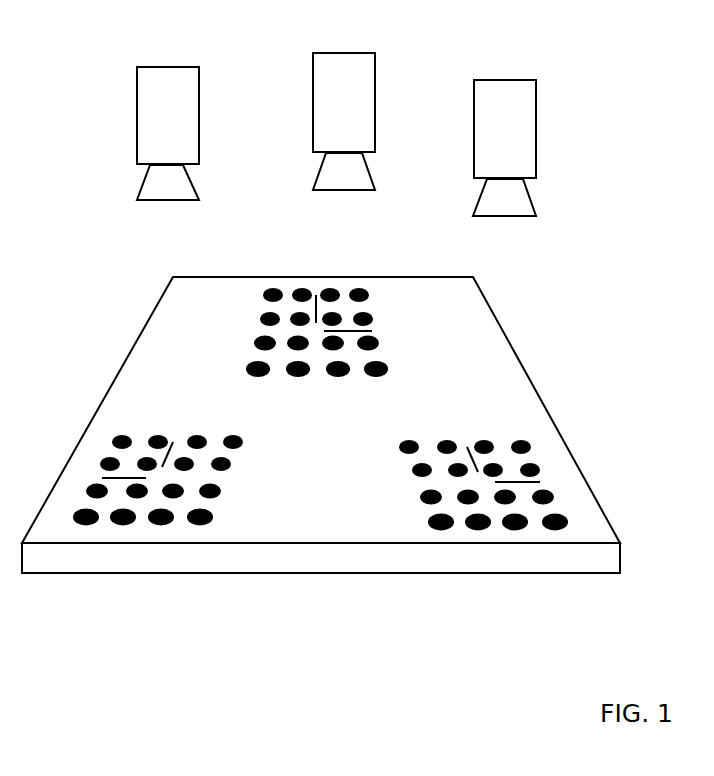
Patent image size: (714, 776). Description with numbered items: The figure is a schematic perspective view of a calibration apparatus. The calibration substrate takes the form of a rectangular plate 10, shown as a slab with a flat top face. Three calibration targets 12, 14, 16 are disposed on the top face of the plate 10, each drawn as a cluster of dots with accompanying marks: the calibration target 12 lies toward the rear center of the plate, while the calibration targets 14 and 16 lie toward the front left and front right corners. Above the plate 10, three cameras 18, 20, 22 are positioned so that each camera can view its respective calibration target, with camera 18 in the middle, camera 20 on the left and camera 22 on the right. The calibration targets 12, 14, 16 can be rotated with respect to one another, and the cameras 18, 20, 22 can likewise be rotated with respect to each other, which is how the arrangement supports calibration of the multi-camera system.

The rectangular plate 10 is at (525, 367).
The calibration target 12 is at (250, 322).
The calibration target 14 is at (171, 426).
The calibration target 16 is at (473, 428).
The camera 18 is at (332, 52).
The camera 20 is at (170, 65).
The camera 22 is at (493, 79).